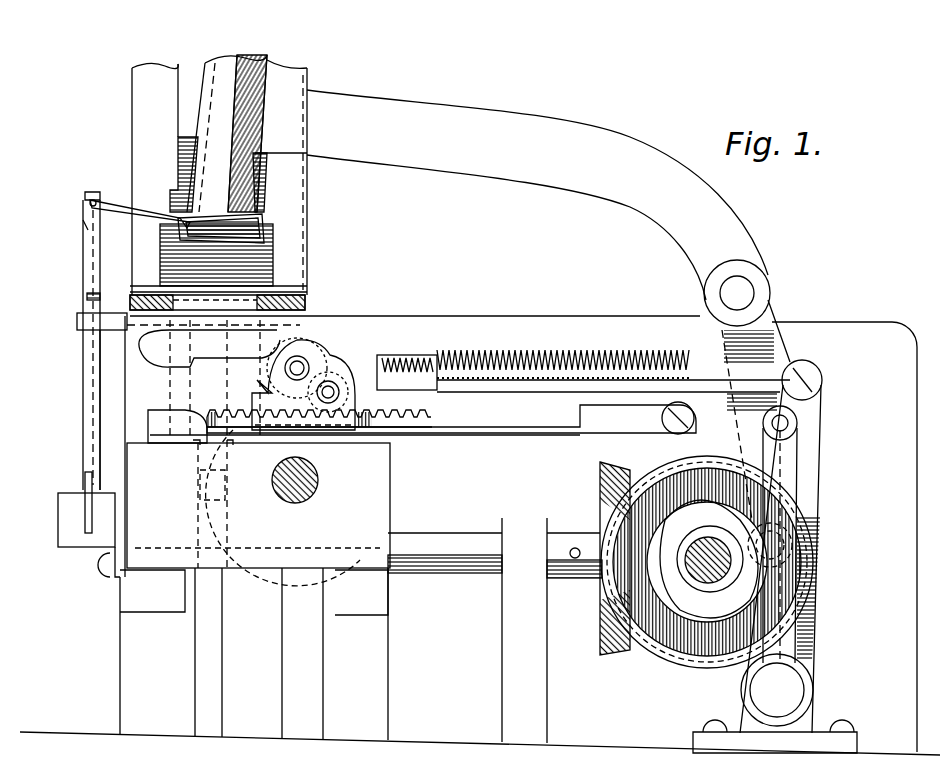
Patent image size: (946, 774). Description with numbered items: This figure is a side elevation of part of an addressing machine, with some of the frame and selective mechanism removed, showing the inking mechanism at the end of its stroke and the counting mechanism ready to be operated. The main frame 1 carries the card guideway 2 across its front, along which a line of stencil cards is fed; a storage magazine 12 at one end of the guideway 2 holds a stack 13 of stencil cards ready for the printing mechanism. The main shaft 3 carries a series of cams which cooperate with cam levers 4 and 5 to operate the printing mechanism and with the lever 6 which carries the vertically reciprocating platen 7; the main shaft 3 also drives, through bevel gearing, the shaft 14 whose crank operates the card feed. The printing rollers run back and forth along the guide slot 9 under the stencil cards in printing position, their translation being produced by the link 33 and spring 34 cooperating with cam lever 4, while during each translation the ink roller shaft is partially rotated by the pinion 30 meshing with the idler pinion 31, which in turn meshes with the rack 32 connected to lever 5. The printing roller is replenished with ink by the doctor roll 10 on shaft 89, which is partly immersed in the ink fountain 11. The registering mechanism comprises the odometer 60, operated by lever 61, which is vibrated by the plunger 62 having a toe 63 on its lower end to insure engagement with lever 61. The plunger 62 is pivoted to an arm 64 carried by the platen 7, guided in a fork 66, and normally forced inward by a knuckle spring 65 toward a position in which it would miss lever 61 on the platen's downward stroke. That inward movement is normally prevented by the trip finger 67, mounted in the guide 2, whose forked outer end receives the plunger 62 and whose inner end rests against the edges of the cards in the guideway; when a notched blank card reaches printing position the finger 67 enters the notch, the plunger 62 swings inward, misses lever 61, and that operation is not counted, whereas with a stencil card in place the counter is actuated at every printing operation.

The main frame 1 is at (443, 325).
The card guideway 2 is at (308, 306).
The main shaft 3 is at (708, 565).
The cam lever 4 is at (805, 438).
The cam lever 5 is at (788, 462).
The lever 6 is at (778, 356).
The platen 7 is at (268, 232).
The guide slot 9 is at (268, 342).
The doctor roll 10 is at (340, 440).
The ink fountain 11 is at (372, 512).
The storage magazine 12 is at (296, 262).
The stack of stencil cards 13 is at (180, 168).
The shaft 14 is at (456, 570).
The pinion 30 is at (315, 352).
The idler pinion 31 is at (350, 396).
The rack 32 is at (412, 414).
The link 33 is at (622, 390).
The spring 34 is at (528, 350).
The odometer 60 is at (80, 545).
The lever 61 is at (85, 500).
The plunger 62 is at (86, 443).
The toe 63 is at (85, 485).
The arm 64 is at (125, 203).
The knuckle spring 65 is at (85, 226).
The fork 66 is at (78, 322).
The trip finger 67 is at (95, 297).
The shaft 89 is at (283, 508).